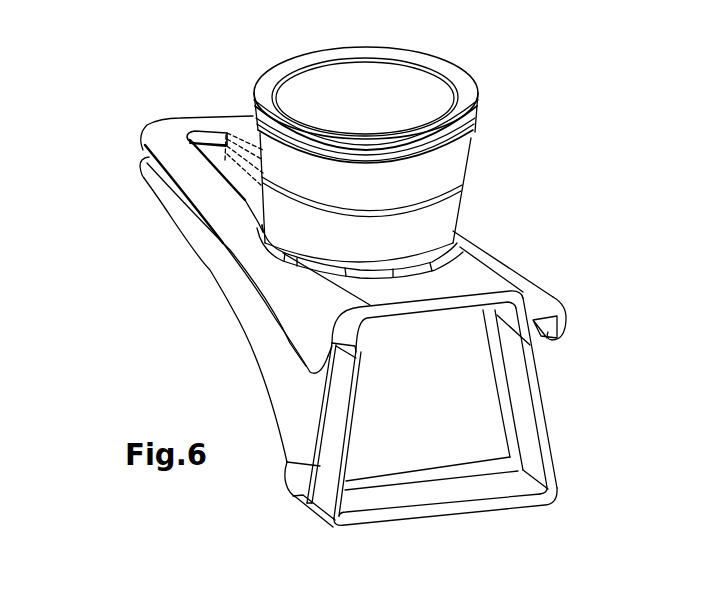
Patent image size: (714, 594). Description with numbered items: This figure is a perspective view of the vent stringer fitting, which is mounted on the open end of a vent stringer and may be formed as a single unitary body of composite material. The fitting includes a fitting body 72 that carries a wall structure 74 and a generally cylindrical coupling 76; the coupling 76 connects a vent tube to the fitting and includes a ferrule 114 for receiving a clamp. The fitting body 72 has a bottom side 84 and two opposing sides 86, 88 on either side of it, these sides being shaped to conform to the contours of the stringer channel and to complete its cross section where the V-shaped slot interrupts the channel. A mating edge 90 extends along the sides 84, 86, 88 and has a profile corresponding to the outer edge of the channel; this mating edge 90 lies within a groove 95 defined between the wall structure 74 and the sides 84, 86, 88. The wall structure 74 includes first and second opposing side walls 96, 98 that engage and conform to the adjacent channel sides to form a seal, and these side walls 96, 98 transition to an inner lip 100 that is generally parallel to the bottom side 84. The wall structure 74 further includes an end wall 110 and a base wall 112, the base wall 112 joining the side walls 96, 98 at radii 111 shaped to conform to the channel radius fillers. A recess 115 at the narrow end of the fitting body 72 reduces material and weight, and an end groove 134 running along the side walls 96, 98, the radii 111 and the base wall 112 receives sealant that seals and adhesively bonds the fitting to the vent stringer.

The fitting body 72 is at (472, 280).
The wall structure 74 is at (547, 382).
The coupling 76 is at (480, 162).
The bottom side 84 is at (163, 145).
The side 86 is at (568, 329).
The side 88 is at (303, 309).
The mating edge 90 is at (298, 360).
The groove 95 is at (143, 157).
The first side wall 96 is at (552, 407).
The second side wall 98 is at (293, 393).
The inner lip 100 is at (152, 188).
The end wall 110 is at (468, 440).
The radii 111 is at (322, 518).
The base wall 112 is at (457, 493).
The ferrule 114 is at (473, 128).
The recess 115 is at (217, 133).
The end groove 134 is at (310, 464).